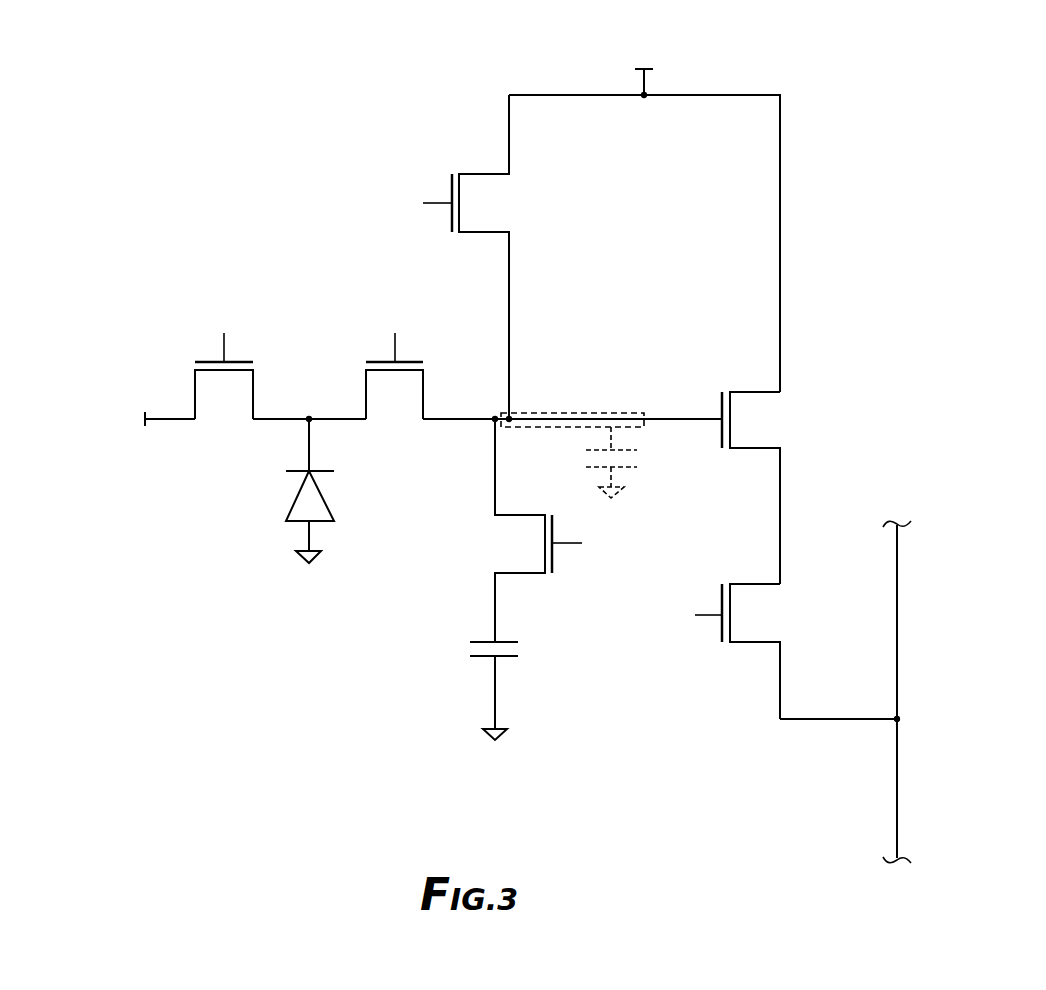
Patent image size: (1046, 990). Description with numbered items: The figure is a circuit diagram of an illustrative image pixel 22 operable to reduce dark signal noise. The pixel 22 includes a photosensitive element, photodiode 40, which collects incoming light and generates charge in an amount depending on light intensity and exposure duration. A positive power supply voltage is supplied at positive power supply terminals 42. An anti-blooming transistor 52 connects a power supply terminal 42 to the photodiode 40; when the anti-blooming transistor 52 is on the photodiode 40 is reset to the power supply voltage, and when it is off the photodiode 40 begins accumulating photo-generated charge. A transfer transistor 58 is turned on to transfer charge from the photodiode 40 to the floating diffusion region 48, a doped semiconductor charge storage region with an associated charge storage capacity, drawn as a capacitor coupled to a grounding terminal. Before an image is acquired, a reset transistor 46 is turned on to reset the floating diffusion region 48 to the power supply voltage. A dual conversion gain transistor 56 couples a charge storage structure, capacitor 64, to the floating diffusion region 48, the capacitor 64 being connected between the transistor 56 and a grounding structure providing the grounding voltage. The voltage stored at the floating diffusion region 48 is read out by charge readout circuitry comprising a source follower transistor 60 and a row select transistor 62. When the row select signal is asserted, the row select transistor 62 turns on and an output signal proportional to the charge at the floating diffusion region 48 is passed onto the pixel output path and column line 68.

The image pixel 22 is at (130, 73).
The anti-blooming transistor 52 is at (140, 262).
The positive power supply terminal 42 is at (103, 380).
The photodiode 40 is at (280, 505).
The transfer transistor 58 is at (420, 345).
The floating diffusion region 48 is at (632, 398).
The reset transistor 46 is at (475, 168).
The dual conversion gain transistor 56 is at (497, 553).
The charge storage structure 64 is at (462, 661).
The source follower transistor 60 is at (737, 458).
The row select transistor 62 is at (735, 652).
The column line 68 is at (897, 765).